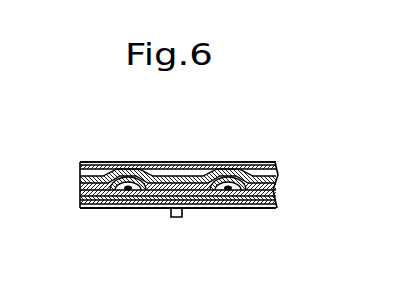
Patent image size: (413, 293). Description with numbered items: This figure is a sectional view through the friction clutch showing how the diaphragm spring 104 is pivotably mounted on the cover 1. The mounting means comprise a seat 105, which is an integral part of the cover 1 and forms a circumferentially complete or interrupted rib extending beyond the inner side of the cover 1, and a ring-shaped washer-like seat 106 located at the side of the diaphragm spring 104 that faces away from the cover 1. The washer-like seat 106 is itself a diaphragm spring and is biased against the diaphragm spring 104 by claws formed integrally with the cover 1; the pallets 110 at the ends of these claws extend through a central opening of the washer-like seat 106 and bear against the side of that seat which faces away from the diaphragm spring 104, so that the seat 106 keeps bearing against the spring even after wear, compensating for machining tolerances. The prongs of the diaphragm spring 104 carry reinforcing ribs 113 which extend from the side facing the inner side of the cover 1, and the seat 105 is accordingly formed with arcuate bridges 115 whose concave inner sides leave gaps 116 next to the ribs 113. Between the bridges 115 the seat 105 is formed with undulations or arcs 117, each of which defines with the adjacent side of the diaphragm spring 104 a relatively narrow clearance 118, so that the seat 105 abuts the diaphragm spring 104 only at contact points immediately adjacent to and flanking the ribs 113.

The cover 1 is at (208, 165).
The diaphragm spring 104 is at (278, 193).
The seat 105 is at (214, 166).
The washer-like seat 106 is at (149, 206).
The pallets 110 is at (181, 218).
The reinforcing ribs 113 is at (111, 204).
The bridges 115 is at (108, 164).
The gaps 116 is at (132, 167).
The arcs 117 is at (169, 170).
The clearance 118 is at (198, 206).